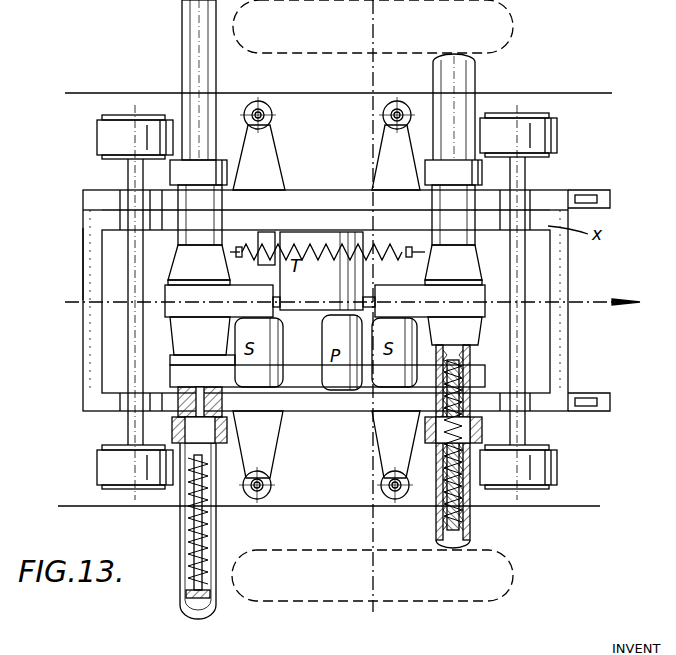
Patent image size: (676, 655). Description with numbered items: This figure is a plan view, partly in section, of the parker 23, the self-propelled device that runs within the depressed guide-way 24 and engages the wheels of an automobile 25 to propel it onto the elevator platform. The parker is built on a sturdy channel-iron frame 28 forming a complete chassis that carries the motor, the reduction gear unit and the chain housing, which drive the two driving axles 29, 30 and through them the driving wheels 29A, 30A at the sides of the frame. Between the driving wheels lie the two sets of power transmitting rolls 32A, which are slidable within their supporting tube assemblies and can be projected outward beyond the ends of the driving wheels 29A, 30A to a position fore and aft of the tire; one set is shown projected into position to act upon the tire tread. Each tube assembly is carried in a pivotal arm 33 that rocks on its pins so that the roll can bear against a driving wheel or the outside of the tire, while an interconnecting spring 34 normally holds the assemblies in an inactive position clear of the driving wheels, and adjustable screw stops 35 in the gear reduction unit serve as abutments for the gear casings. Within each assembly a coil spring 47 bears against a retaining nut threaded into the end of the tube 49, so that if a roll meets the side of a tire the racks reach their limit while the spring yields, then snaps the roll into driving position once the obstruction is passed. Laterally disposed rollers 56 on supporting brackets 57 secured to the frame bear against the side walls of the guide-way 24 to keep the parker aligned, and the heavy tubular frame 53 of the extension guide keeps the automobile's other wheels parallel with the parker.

The parker 23 is at (84, 228).
The guide-way 24 is at (592, 93).
The automobile 25 is at (268, 600).
The frame 28 is at (83, 205).
The driving axle 29 is at (127, 170).
The driving wheel 29A is at (98, 133).
The driving axle 30 is at (526, 438).
The driving wheel 30A is at (556, 128).
The power transmitting roll 32A is at (182, 30).
The pivotal arm 33 is at (175, 170).
The interconnecting spring 34 is at (385, 262).
The adjustable stop 35 is at (278, 308).
The coil spring 47 is at (190, 548).
The tube 49 is at (186, 565).
The tubular frame 53 is at (605, 190).
The guide roller 56 is at (382, 105).
The supporting bracket 57 is at (268, 455).